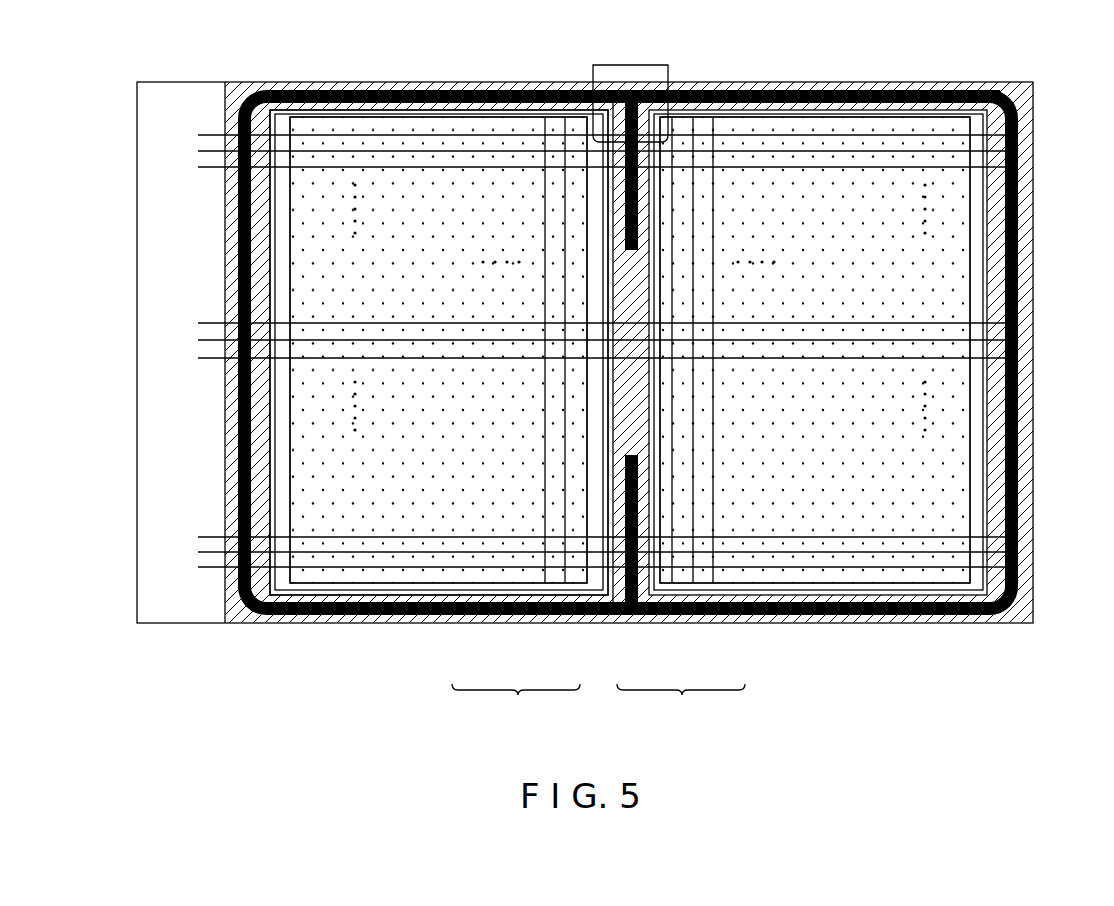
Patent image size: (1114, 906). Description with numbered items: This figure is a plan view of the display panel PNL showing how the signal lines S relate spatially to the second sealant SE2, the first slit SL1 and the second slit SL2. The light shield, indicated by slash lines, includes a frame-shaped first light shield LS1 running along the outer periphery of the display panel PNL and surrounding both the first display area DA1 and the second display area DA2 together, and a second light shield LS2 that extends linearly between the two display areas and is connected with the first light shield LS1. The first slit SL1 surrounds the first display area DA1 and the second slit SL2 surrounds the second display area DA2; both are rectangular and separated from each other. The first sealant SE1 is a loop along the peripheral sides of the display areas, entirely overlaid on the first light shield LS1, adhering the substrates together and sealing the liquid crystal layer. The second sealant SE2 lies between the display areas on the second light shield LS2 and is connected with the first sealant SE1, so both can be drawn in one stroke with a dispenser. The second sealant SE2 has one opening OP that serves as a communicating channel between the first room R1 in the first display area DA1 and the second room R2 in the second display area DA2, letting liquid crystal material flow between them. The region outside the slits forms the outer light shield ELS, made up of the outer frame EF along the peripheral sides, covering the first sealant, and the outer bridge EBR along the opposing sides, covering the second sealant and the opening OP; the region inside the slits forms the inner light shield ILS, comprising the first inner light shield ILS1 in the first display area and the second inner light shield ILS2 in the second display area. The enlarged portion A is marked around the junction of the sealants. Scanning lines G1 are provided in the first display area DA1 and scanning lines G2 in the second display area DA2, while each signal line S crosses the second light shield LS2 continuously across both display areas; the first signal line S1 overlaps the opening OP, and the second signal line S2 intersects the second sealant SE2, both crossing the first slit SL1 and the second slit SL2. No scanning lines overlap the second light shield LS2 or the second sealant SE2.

The display panel PNL is at (1033, 623).
The opening OP is at (620, 375).
The first slit SL1 is at (388, 102).
The second slit SL2 is at (686, 110).
The first light shield LS1 is at (892, 102).
The second light shield LS2 is at (665, 510).
The first sealant SE1 is at (830, 113).
The second sealant SE2 is at (645, 212).
The enlarged area A is at (617, 65).
The first room R1 is at (437, 494).
The second room R2 is at (852, 494).
The first display area DA1 is at (447, 175).
The second display area DA2 is at (745, 180).
The outer frame EF is at (470, 623).
The outer bridge EBR is at (600, 470).
The outer light shield ELS is at (516, 706).
The first inner light shield ILS1 is at (603, 587).
The second inner light shield ILS2 is at (714, 590).
The inner light shield ILS is at (681, 706).
The scanning lines G1 is at (545, 452).
The scanning lines G2 is at (712, 427).
The signal lines S is at (196, 127).
The first signal line S1 is at (855, 323).
The second signal line S2 is at (855, 168).